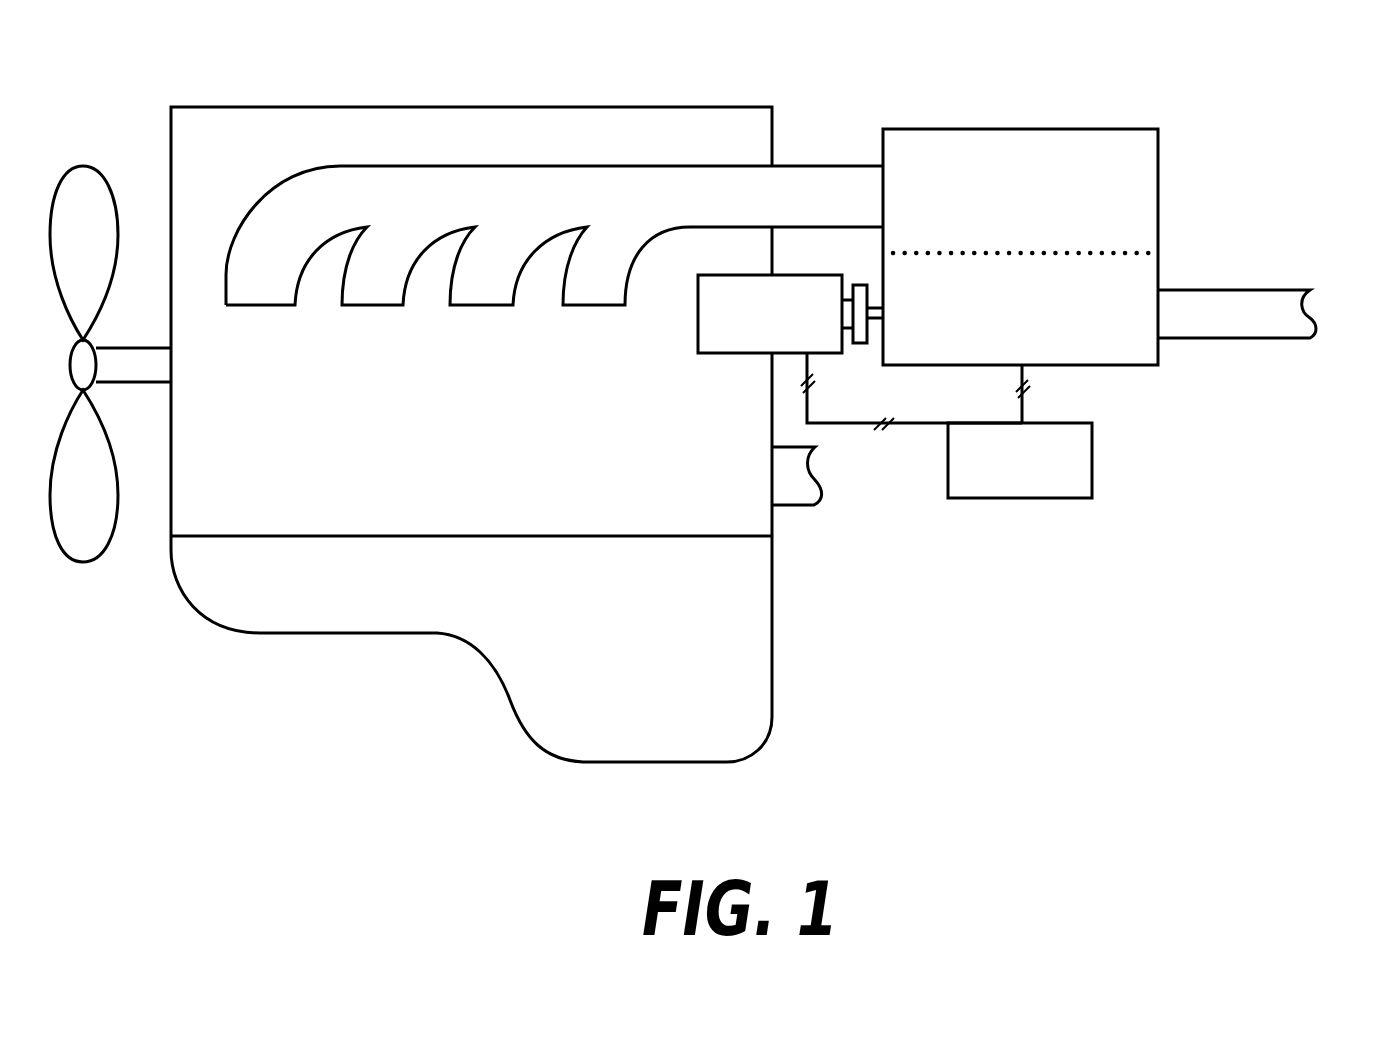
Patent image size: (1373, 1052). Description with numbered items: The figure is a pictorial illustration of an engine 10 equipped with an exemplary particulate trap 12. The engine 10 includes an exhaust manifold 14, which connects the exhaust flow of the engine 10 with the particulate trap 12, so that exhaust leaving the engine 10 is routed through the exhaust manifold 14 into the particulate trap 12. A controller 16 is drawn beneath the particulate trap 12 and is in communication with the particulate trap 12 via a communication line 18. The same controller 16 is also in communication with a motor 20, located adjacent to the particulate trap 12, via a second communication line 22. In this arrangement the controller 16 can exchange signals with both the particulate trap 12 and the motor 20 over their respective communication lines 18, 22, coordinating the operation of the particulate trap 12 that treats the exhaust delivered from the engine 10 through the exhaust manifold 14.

The engine 10 is at (436, 462).
The particulate trap 12 is at (1218, 171).
The exhaust manifold 14 is at (532, 212).
The controller 16 is at (1040, 476).
The communication line 18 is at (1022, 405).
The motor 20 is at (748, 328).
The communication line 22 is at (837, 423).